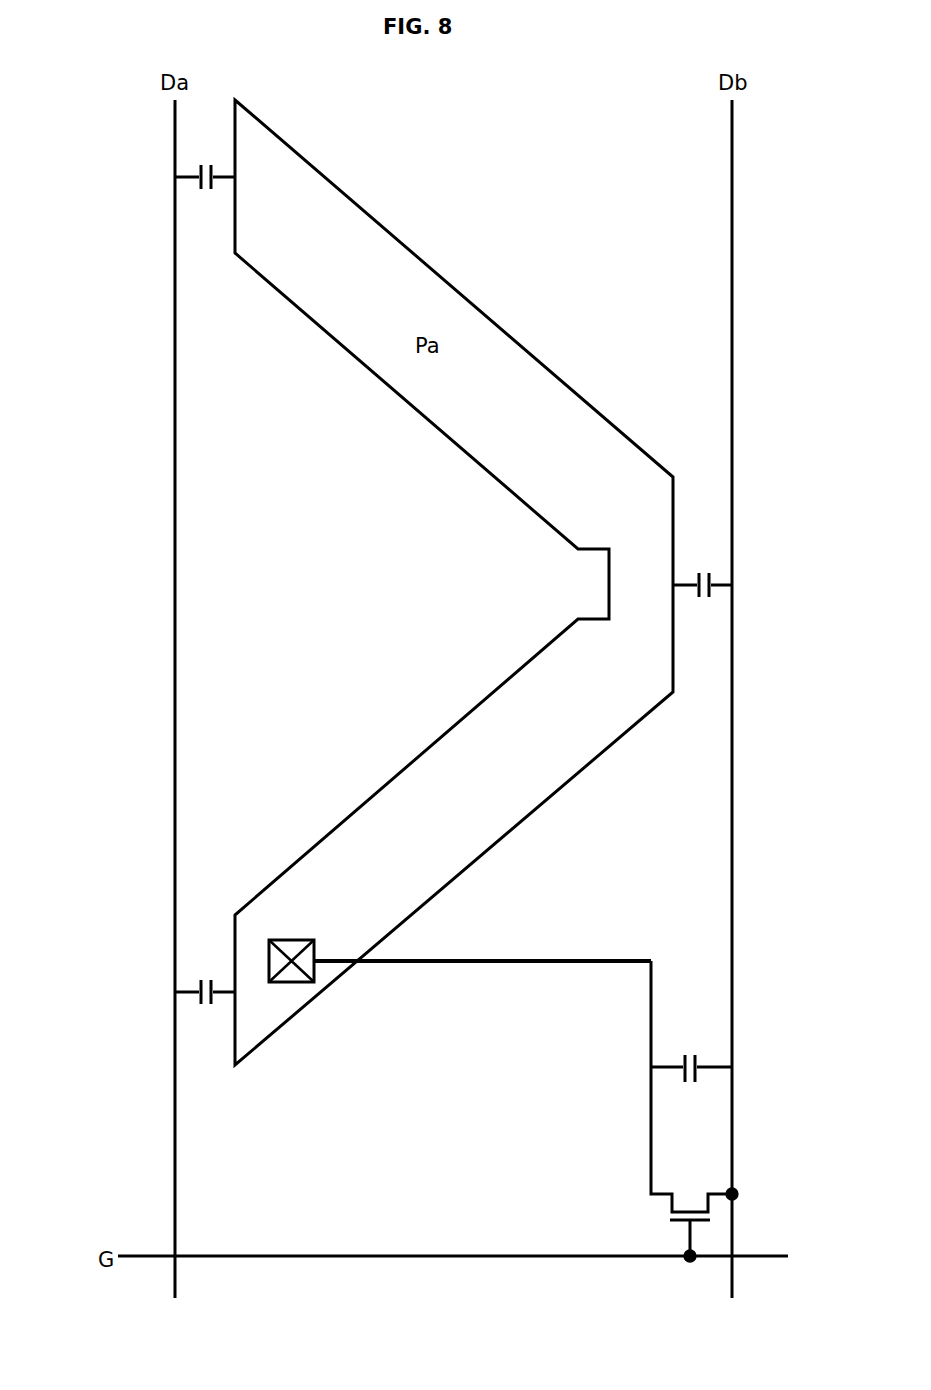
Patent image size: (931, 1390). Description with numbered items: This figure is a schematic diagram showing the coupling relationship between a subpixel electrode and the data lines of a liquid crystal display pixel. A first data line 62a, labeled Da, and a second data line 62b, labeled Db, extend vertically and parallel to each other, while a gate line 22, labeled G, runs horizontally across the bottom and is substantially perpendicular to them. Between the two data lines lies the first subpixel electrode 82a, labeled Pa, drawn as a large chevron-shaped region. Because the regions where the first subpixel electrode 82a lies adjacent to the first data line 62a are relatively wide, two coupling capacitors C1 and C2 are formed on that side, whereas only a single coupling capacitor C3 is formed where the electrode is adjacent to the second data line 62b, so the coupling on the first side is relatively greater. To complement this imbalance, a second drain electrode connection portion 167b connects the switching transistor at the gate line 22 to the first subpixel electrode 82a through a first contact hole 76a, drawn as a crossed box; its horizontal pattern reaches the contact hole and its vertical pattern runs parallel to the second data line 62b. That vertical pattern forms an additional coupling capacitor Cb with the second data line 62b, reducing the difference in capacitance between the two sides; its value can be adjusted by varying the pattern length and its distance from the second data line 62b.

The first data line 62a is at (175, 545).
The second data line 62b is at (733, 426).
The gate line G 22 is at (485, 1257).
The first subpixel electrode 82a is at (495, 322).
The first contact hole 76a is at (290, 940).
The second drain electrode connection portion 167b is at (526, 1111).
The coupling capacitor C1 is at (205, 191).
The coupling capacitor C2 is at (205, 1006).
The coupling capacitor C3 is at (702, 599).
The coupling capacitor Cb is at (691, 1056).